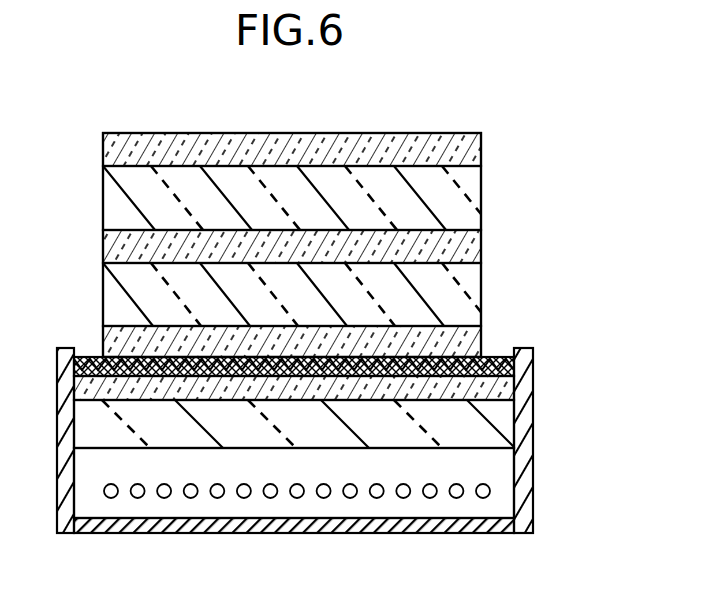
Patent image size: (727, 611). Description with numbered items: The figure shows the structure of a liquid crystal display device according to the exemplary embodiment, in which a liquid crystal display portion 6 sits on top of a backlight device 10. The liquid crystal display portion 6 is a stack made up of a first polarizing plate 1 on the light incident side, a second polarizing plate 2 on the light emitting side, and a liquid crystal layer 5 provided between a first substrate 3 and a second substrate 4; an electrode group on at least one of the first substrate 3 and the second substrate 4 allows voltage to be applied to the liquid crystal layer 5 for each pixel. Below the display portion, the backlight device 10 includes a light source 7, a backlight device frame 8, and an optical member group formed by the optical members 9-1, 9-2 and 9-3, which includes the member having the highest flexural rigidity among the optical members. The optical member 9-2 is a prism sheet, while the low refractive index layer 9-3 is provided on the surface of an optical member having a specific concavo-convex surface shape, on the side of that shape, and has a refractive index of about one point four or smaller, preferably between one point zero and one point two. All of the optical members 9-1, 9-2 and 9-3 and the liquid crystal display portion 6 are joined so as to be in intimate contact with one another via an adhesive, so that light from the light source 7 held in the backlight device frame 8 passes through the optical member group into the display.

The first polarizing plate 1 is at (481, 341).
The second polarizing plate 2 is at (481, 152).
The first substrate 3 is at (481, 288).
The second substrate 4 is at (481, 197).
The liquid crystal layer 5 is at (481, 243).
The liquid crystal display portion 6 is at (558, 124).
The light source 7 is at (486, 484).
The backlight device frame 8 is at (533, 507).
The optical member 9-1 is at (502, 428).
The prism sheet 9-2 is at (514, 391).
The low refractive index layer 9-3 is at (517, 364).
The backlight device 10 is at (640, 345).